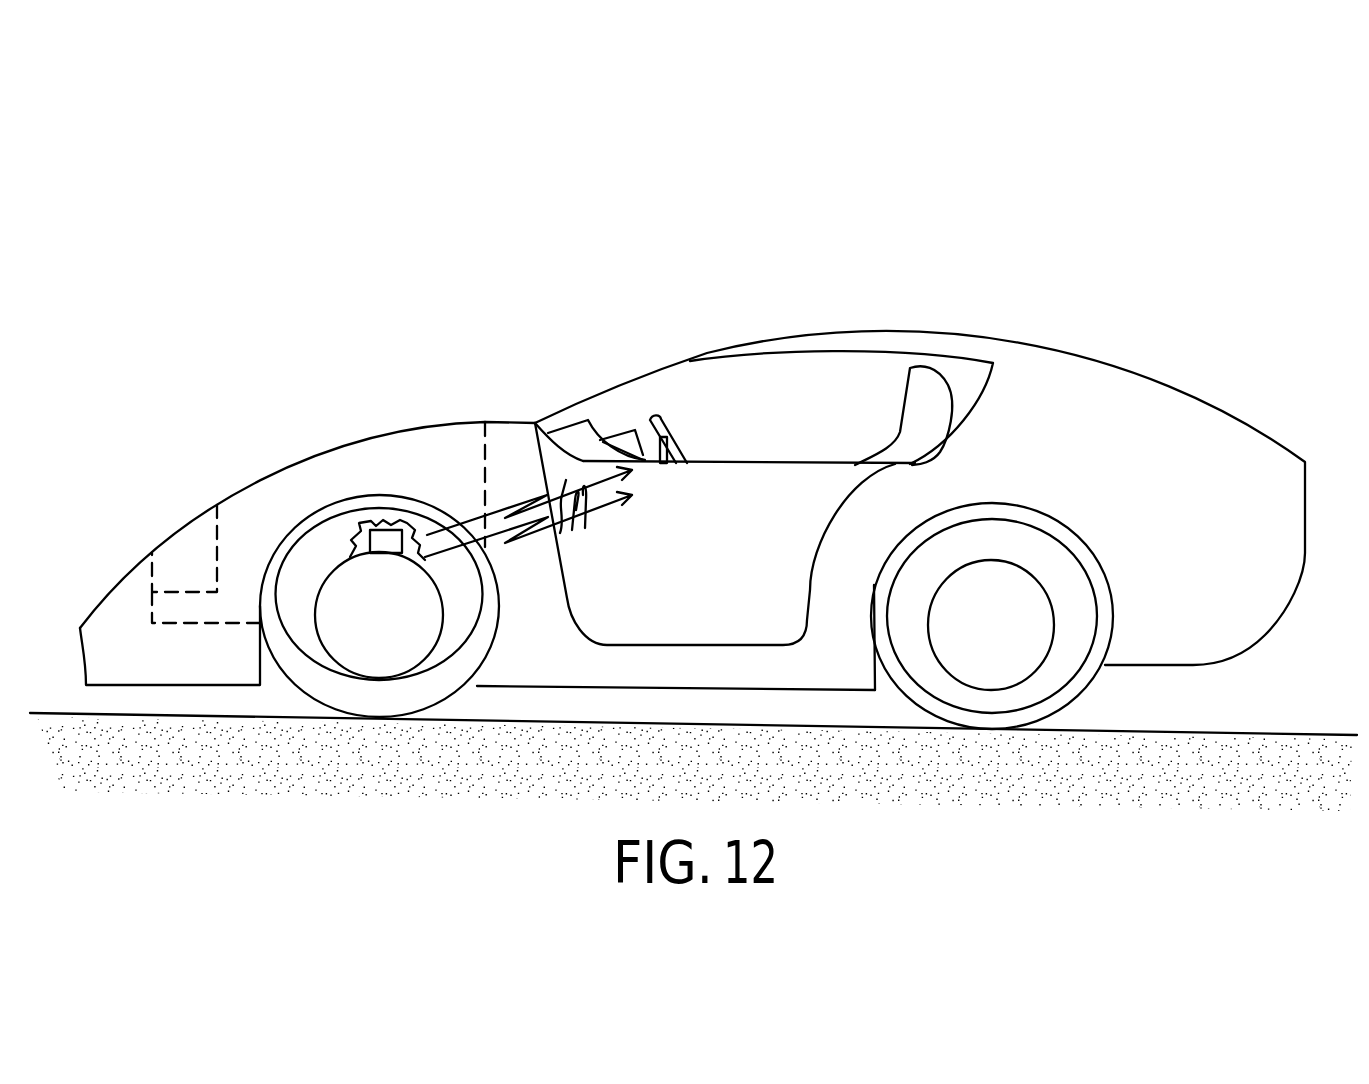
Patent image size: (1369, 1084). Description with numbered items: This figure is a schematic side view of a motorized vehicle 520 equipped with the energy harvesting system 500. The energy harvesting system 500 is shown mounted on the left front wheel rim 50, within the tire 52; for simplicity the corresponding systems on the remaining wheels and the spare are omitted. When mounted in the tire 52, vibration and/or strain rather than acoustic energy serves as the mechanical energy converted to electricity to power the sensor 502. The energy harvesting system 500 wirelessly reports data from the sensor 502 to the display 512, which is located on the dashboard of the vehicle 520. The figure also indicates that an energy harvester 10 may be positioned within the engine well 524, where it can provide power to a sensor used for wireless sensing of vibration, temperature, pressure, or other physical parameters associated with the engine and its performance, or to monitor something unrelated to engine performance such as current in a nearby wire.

The motorized vehicle 520 is at (1063, 244).
The engine well 524 is at (278, 497).
The energy harvester 10 is at (185, 553).
The wheel rim 50 is at (443, 613).
The tire 52 is at (418, 690).
The energy harvesting system 500 is at (392, 527).
The sensor 502 is at (382, 545).
The display 512 is at (693, 441).